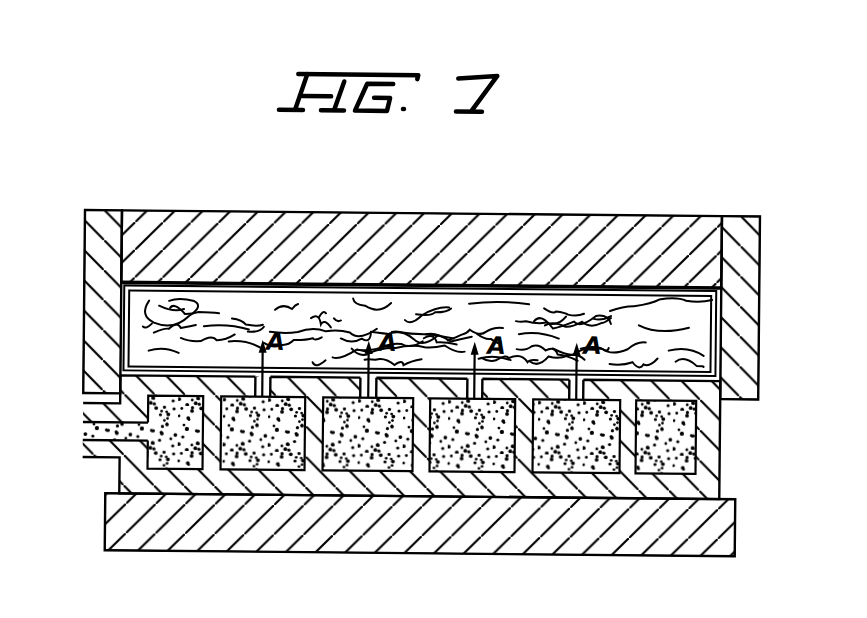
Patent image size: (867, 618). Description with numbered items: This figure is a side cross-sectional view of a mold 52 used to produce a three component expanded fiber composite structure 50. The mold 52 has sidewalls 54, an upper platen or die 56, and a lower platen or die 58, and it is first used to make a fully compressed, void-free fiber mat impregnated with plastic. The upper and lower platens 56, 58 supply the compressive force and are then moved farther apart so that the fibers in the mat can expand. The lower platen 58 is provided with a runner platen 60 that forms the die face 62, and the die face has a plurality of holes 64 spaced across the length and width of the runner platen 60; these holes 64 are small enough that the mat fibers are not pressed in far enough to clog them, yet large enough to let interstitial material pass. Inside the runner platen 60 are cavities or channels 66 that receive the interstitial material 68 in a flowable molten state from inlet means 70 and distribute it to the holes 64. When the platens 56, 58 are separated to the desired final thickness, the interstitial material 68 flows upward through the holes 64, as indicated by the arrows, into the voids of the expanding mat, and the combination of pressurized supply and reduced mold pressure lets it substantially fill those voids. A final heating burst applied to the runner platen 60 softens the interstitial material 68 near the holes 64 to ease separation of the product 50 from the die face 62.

The three component expanded fiber composite structure 50 is at (695, 328).
The mold 52 is at (65, 240).
The sidewalls 54 is at (85, 302).
The upper platen or die 56 is at (612, 198).
The lower platen or die 58 is at (636, 552).
The runner platen 60 is at (120, 471).
The die face 62 is at (128, 349).
The holes 64 is at (243, 357).
The cavities or channels 66 is at (244, 457).
The interstitial material 68 is at (590, 448).
The inlet means 70 is at (88, 431).